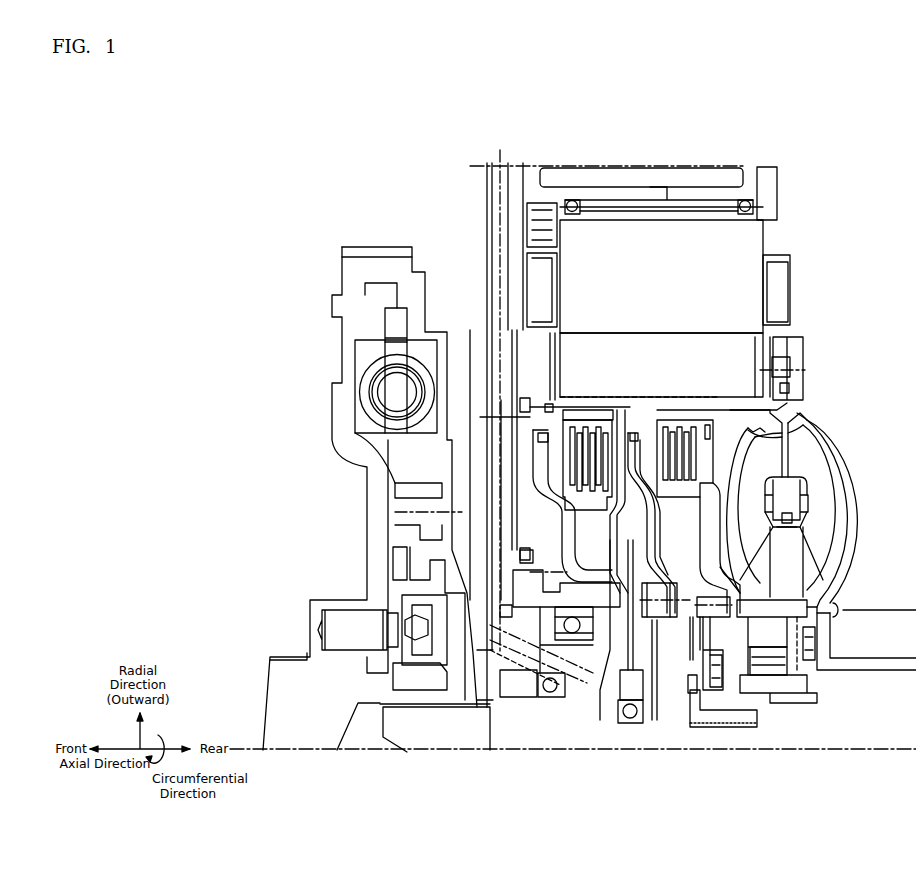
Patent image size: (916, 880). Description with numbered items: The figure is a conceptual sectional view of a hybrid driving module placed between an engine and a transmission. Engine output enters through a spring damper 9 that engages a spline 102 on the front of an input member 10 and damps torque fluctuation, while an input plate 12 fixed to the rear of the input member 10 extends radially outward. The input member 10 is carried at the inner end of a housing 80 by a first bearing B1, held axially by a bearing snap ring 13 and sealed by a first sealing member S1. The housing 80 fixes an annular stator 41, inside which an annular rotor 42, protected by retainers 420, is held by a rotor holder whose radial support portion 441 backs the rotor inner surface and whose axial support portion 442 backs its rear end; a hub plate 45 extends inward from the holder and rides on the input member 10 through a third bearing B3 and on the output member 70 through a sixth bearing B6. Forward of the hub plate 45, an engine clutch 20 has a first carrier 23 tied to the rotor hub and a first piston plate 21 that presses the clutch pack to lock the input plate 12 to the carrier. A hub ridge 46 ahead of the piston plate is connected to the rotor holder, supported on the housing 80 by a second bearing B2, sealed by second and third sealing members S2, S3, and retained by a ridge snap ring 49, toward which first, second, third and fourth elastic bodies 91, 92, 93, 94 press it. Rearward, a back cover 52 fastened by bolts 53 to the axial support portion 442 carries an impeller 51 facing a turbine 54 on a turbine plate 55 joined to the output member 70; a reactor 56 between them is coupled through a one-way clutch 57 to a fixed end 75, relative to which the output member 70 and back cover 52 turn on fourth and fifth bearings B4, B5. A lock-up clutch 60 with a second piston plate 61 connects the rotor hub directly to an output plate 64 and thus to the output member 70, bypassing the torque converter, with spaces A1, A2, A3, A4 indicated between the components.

The spring damper 9 is at (312, 348).
The input member 10 is at (452, 740).
The spline 102 is at (380, 717).
The input plate 12 is at (632, 645).
The bearing snap ring 13 is at (540, 697).
The engine clutch 20 is at (477, 417).
The first piston plate 21 is at (543, 497).
The first carrier 23 is at (570, 415).
The stator 41 is at (752, 235).
The rotor 42 is at (747, 350).
The retainer 420 is at (527, 387).
The radial support portion 441 is at (783, 347).
The axial support portion 442 is at (773, 363).
The hub plate 45 is at (668, 658).
The hub ridge 46 is at (520, 517).
The ridge snap ring 49 is at (480, 417).
The impeller 51 is at (823, 462).
The back cover 52 is at (860, 503).
The bolt 53 is at (800, 377).
The turbine 54 is at (775, 468).
The turbine plate 55 is at (723, 523).
The reactor 56 is at (797, 552).
The one-way clutch 57 is at (780, 627).
The lock-up clutch 60 is at (790, 413).
The second piston plate 61 is at (652, 528).
The output plate 64 is at (703, 545).
The output member 70 is at (703, 717).
The fixed end 75 is at (790, 693).
The housing 80 is at (513, 165).
The first elastic body 91 is at (553, 350).
The second elastic body 92 is at (757, 353).
The third elastic body 93 is at (570, 417).
The fourth elastic body 94 is at (623, 410).
The space A1 is at (519, 585).
The space A2 is at (583, 535).
The space A3 is at (678, 518).
The space A4 is at (673, 646).
The first bearing B1 is at (551, 697).
The second bearing B2 is at (572, 633).
The third bearing B3 is at (632, 717).
The fourth bearing B4 is at (717, 673).
The fifth bearing B5 is at (813, 657).
The sixth bearing B6 is at (690, 692).
The first sealing member S1 is at (493, 703).
The second sealing member S2 is at (527, 555).
The third sealing member S3 is at (507, 613).